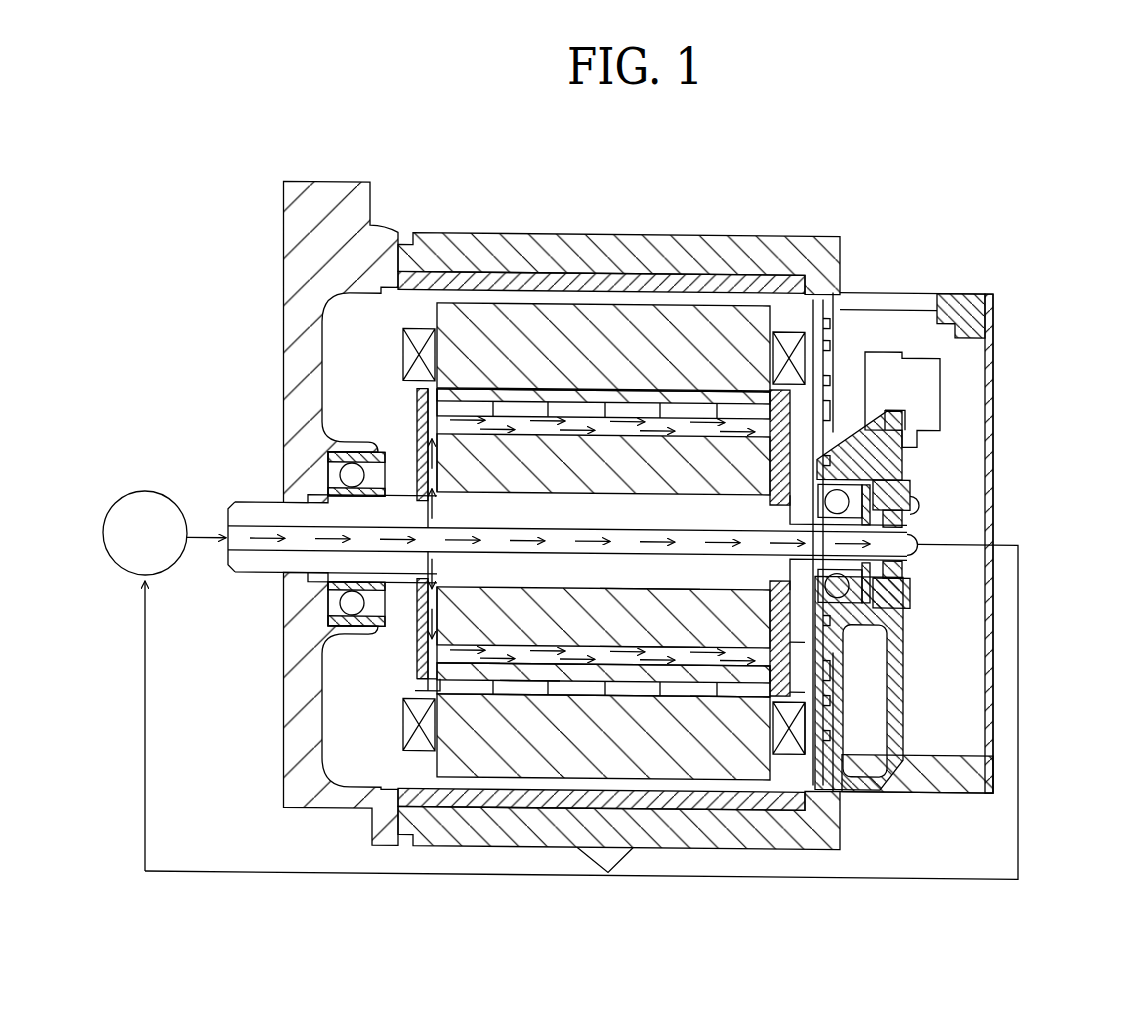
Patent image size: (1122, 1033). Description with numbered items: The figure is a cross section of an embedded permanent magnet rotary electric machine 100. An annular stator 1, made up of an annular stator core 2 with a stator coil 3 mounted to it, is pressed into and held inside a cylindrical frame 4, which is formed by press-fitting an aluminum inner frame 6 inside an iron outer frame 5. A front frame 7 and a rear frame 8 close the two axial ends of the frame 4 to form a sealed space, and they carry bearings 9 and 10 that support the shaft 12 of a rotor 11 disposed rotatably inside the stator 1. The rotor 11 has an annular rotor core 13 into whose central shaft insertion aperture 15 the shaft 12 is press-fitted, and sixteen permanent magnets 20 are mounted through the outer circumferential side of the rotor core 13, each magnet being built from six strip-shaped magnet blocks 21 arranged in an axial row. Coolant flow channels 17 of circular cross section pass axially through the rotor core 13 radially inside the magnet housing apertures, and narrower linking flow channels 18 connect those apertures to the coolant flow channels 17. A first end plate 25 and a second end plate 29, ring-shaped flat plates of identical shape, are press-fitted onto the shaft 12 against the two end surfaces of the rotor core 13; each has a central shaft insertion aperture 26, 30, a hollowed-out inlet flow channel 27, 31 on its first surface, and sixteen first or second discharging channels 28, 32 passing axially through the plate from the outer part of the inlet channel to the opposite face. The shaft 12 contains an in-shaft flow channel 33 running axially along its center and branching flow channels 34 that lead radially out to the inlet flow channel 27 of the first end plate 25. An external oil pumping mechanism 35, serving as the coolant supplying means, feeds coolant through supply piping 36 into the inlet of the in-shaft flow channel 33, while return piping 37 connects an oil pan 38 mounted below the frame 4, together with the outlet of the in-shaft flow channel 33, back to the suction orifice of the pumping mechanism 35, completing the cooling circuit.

The embedded permanent magnet rotary electric machine 100 is at (97, 146).
The stator 1 is at (604, 455).
The stator core 2 is at (482, 312).
The stator coil 3 is at (425, 345).
The frame 4 is at (619, 490).
The outer frame 5 is at (620, 236).
The inner frame 6 is at (585, 280).
The front frame 7 is at (292, 234).
The rear frame 8 is at (960, 298).
The bearing 9 is at (330, 454).
The bearing 10 is at (873, 483).
The rotor 11 is at (716, 705).
The shaft 12 is at (253, 510).
The rotor core 13 is at (682, 646).
The shaft insertion aperture 15 is at (648, 592).
The coolant flow channel 17 is at (557, 657).
The linking flow channel 18 is at (527, 664).
The permanent magnet 20 is at (652, 400).
The magnet block 21 is at (693, 410).
The first end plate 25 is at (414, 434).
The shaft insertion aperture 26 is at (398, 616).
The inlet flow channel 27 is at (422, 645).
The first discharging channel 28 is at (423, 692).
The second end plate 29 is at (790, 440).
The shaft insertion aperture 30 is at (800, 600).
The inlet flow channel 31 is at (797, 684).
The second discharging channel 32 is at (812, 721).
The in-shaft flow channel 33 is at (287, 551).
The branching flow channel 34 is at (337, 570).
The external oil pumping mechanism 35 is at (125, 504).
The supply piping 36 is at (202, 530).
The return piping 37 is at (1018, 836).
The oil pan 38 is at (608, 862).